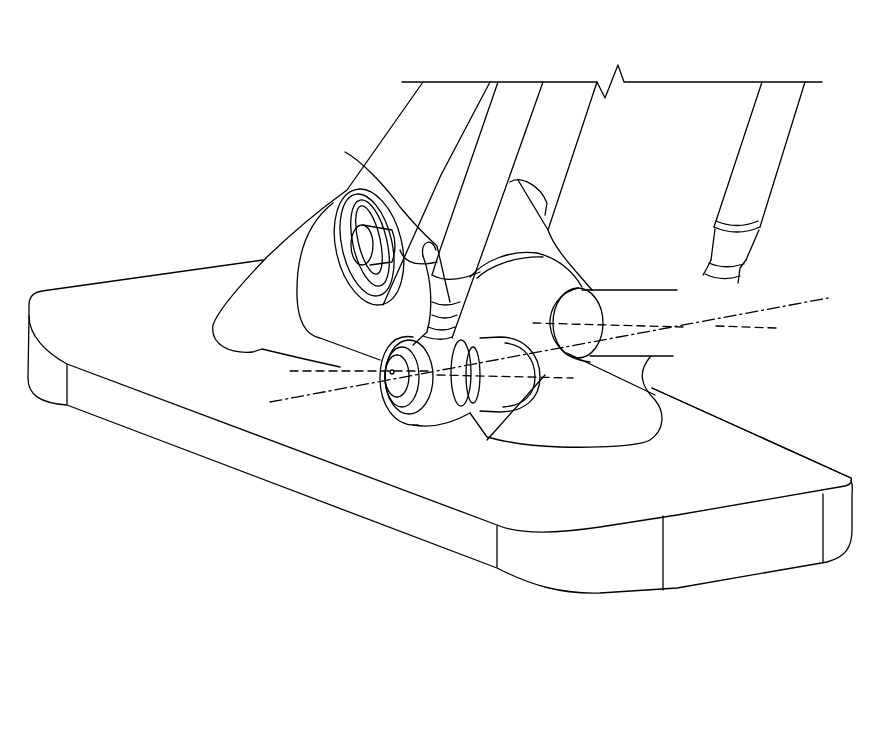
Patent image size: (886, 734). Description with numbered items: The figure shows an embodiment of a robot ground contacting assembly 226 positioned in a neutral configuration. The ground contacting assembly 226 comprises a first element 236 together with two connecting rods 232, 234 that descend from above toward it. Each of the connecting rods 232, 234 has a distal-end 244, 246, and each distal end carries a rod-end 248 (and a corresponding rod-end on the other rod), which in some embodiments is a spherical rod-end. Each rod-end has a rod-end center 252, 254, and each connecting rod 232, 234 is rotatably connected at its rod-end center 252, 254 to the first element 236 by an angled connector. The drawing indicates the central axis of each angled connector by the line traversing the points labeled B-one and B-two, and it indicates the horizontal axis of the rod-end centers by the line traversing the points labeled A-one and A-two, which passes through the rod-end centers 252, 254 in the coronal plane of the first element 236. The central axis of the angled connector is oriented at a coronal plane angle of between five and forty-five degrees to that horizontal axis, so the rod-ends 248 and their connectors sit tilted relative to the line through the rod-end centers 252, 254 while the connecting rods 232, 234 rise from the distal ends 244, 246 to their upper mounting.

The ground contacting assembly 226 is at (135, 228).
The connecting rod 232 is at (517, 97).
The connecting rod 234 is at (777, 97).
The first element 236 is at (617, 418).
The distal-end 244 is at (388, 193).
The distal-end 246 is at (750, 237).
The rod-end 248 is at (437, 417).
The rod-end center 252 is at (385, 388).
The rod-end center 254 is at (512, 405).